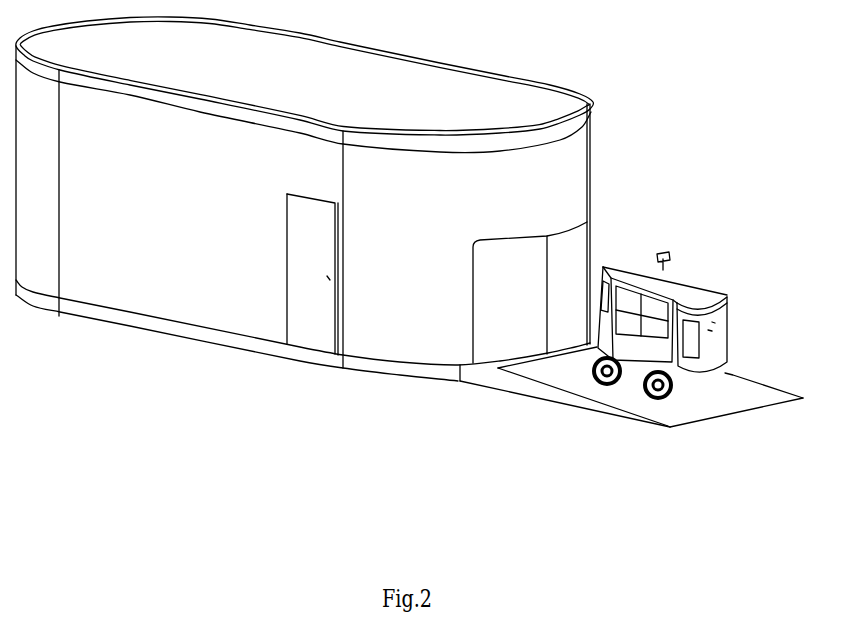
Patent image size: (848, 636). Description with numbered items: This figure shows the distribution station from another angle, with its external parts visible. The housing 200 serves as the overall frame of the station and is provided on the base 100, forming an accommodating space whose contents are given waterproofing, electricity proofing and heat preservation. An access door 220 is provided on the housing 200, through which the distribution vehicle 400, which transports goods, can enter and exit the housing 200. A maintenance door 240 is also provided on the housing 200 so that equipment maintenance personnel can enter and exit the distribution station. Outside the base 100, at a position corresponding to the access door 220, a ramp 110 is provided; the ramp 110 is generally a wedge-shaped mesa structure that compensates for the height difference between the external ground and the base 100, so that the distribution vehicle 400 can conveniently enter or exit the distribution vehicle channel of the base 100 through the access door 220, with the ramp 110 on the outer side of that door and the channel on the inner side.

The base 100 is at (409, 249).
The ramp 110 is at (505, 378).
The housing 200 is at (505, 97).
The access door 220 is at (575, 255).
The maintenance door 240 is at (321, 337).
The distribution vehicle 400 is at (682, 287).